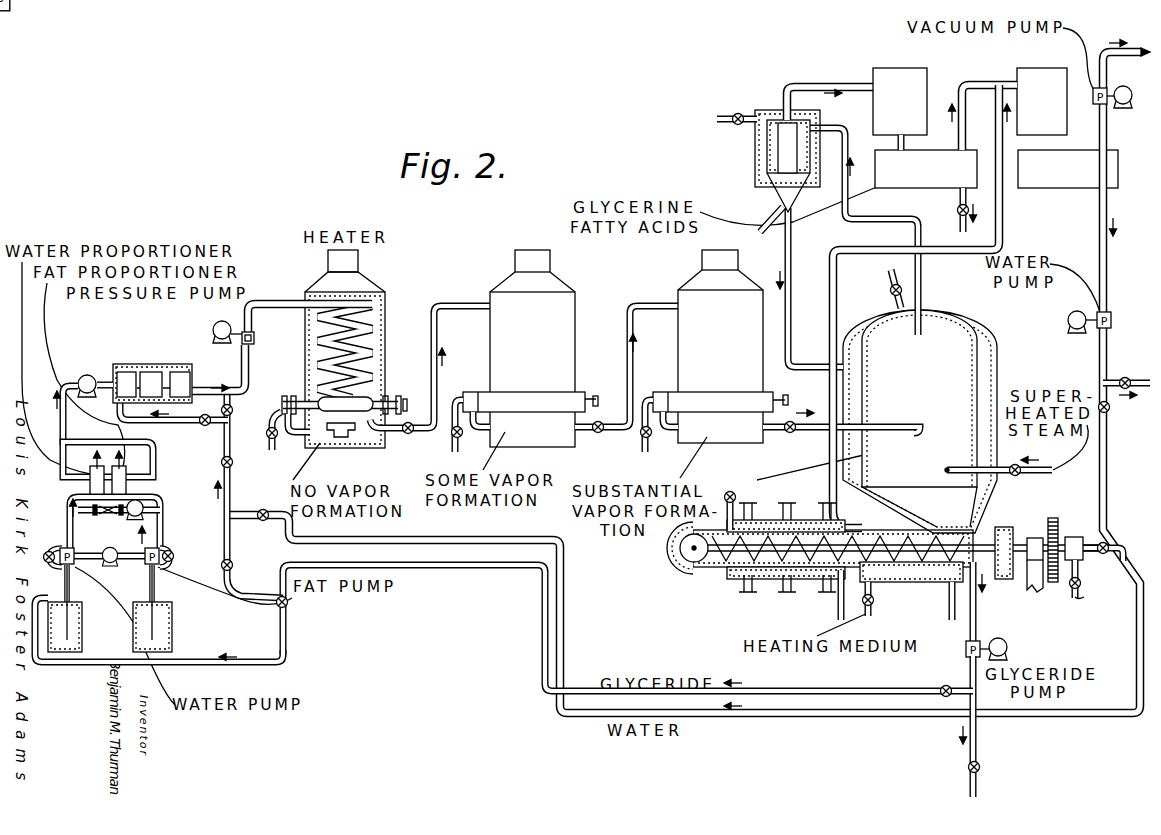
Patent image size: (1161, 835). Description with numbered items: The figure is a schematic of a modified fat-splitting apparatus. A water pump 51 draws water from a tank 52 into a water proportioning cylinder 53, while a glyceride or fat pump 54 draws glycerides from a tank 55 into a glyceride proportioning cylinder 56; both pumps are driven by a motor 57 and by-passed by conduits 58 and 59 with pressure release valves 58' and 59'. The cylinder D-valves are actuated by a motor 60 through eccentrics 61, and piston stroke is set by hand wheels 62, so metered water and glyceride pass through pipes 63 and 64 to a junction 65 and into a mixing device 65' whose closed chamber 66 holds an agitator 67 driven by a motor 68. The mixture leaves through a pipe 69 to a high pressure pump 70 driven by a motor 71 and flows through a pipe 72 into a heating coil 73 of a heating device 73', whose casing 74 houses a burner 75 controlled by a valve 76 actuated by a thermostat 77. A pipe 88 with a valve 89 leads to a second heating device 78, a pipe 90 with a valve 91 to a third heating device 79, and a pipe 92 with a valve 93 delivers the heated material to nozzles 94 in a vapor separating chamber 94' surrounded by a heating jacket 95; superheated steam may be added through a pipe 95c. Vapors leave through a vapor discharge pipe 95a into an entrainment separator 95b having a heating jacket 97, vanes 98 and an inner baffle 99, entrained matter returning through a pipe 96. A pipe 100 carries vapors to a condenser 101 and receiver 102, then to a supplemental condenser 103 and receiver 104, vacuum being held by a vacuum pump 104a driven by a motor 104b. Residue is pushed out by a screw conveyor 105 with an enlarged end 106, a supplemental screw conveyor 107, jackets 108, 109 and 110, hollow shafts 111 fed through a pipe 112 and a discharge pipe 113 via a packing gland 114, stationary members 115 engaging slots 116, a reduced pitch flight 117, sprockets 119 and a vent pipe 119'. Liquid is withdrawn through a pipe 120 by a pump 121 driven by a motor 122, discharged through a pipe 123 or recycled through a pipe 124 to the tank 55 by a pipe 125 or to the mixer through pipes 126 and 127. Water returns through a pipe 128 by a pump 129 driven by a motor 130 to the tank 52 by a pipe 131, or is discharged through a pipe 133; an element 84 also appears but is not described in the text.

The water pump 51 is at (72, 551).
The tank 52 is at (84, 636).
The water proportioning cylinder 53 is at (90, 480).
The glyceride or fat pump 54 is at (160, 563).
The tank 55 is at (173, 637).
The glyceride proportioning cylinder 56 is at (124, 481).
The motor 57 is at (110, 566).
The conduit 58 is at (105, 532).
The pressure release valve 58' is at (109, 603).
The conduit 59 is at (184, 526).
The pressure release valve 59' is at (188, 549).
The motor 60 is at (144, 508).
The eccentrics 61 is at (110, 515).
The hand wheels 62 is at (118, 458).
The pipe 63 is at (60, 453).
The pipe 64 is at (153, 456).
The junction 65 is at (72, 415).
The mixing device 65' is at (140, 370).
The closed chamber 66 is at (178, 370).
The agitator 67 is at (192, 381).
The motor 68 is at (88, 374).
The pipe 69 is at (249, 374).
The high pressure pump 70 is at (255, 338).
The motor 71 is at (227, 322).
The pipe 72 is at (262, 304).
The heating coil 73 is at (363, 334).
The heating device 73' is at (360, 265).
The casing 74 is at (385, 326).
The burner 75 is at (337, 436).
The valve 76 is at (292, 394).
The heat regulator or thermostat 77 is at (358, 413).
The heating device 78 is at (525, 351).
The heating device 79 is at (720, 346).
The drain pipe 84 is at (648, 452).
The pipe 88 is at (446, 305).
The valve 89 is at (409, 434).
The pipe 90 is at (648, 305).
The valve 91 is at (598, 434).
The pipe 92 is at (808, 433).
The valve 93 is at (790, 434).
The nozzles 94 is at (919, 418).
The vapor separating chamber 94' is at (1003, 353).
The heating jacket 95 is at (993, 372).
The vapor discharge pipe 95a is at (921, 292).
The entrainment separator 95b is at (757, 143).
The pipe 95c is at (1006, 467).
The pipe 96 is at (794, 305).
The heating jacket 97 is at (764, 182).
The vanes 98 is at (776, 124).
The inner baffle 99 is at (771, 150).
The pipe 100 is at (822, 87).
The condenser 101 is at (897, 75).
The receiver 102 is at (932, 182).
The supplemental condenser 103 is at (1046, 74).
The receiver 104 is at (1056, 190).
The vacuum pump 104a is at (1106, 89).
The motor 104b is at (1130, 106).
The screw conveyor 105 is at (946, 583).
The enlarged end 106 is at (800, 549).
The supplemental screw conveyor 107 is at (676, 571).
The jacket 108 is at (897, 588).
The jacket 109 is at (816, 578).
The jacket 110 is at (672, 556).
The hollow shafts 111 is at (1003, 526).
The pipe 112 is at (738, 498).
The discharge pipe 113 is at (1084, 597).
The packing gland 114 is at (1078, 537).
The stationary members 115 is at (745, 583).
The slots 116 is at (740, 547).
The reduced pitch flight 117 is at (797, 523).
The sprockets 119 is at (1048, 569).
The vent pipe 119' is at (902, 306).
The pipe 120 is at (978, 596).
The pump 121 is at (966, 650).
The motor 122 is at (1007, 647).
The pipe 123 is at (978, 754).
The pipe 124 is at (777, 691).
The pipe 125 is at (233, 568).
The pipe 126 is at (232, 482).
The pipe 127 is at (233, 416).
The pipe 128 is at (1108, 266).
The pump 129 is at (1112, 321).
The motor 130 is at (1077, 311).
The pipe 131 is at (226, 668).
The pipe 133 is at (1147, 366).